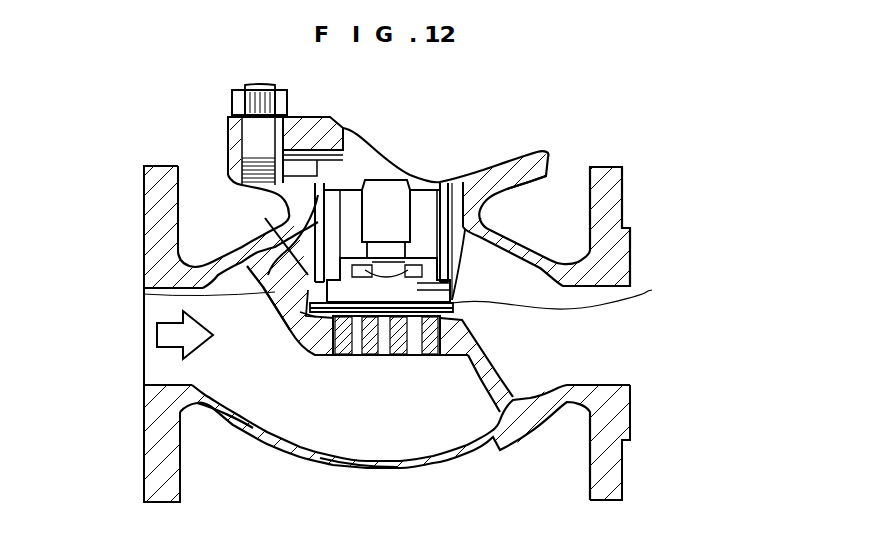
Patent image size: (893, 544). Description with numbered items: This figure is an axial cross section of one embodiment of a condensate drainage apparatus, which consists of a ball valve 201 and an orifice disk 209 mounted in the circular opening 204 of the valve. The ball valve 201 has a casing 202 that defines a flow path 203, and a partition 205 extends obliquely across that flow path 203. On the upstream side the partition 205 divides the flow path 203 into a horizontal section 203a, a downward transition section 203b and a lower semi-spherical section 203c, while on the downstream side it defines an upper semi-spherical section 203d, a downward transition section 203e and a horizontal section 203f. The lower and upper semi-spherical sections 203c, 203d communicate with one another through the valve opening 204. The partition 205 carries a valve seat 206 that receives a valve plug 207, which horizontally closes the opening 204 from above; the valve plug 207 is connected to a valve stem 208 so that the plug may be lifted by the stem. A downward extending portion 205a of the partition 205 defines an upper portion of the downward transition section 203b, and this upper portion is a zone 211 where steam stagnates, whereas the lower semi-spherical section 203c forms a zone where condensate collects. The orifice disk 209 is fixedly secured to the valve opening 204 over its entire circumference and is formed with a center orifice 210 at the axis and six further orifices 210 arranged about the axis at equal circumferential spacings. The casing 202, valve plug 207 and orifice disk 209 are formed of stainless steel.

The ball valve 201 is at (272, 452).
The casing 202 is at (233, 265).
The flow path 203 is at (140, 316).
The horizontal section 203a is at (167, 378).
The downward transition section 203b is at (233, 400).
The lower semi-spherical section 203c is at (355, 427).
The upper semi-spherical section 203d is at (472, 253).
The downward transition section 203e is at (507, 285).
The horizontal section 203f is at (598, 350).
The circular opening 204 is at (333, 400).
The partition 205 is at (447, 400).
The downward extending portion 205a is at (143, 294).
The valve seat 206 is at (576, 289).
The valve plug 207 is at (292, 242).
The valve stem 208 is at (382, 180).
The orifice disk 209 is at (402, 365).
The orifice 210 is at (367, 400).
The zone 211 is at (250, 332).